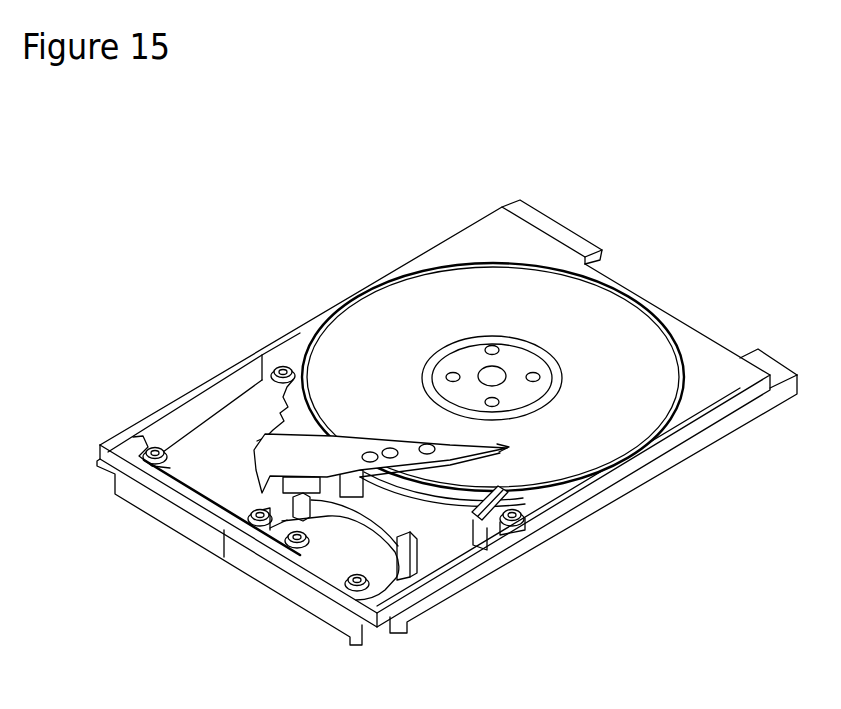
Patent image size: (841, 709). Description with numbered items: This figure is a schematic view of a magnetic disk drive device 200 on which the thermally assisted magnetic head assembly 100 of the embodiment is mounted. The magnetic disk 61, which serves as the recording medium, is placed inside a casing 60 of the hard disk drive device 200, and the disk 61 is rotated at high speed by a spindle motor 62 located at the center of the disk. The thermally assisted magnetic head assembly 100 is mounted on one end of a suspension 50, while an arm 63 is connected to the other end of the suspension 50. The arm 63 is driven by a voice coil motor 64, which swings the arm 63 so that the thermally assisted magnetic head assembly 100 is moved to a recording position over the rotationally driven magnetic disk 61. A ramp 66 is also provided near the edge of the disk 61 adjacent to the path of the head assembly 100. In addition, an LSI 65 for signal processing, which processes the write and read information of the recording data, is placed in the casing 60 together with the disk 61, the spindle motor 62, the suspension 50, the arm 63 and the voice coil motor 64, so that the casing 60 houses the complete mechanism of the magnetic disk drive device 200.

The suspension 50 is at (463, 447).
The casing 60 is at (483, 233).
The magnetic disk 61 is at (643, 337).
The spindle motor 62 is at (492, 376).
The arm 63 is at (323, 455).
The voice coil motor 64 is at (228, 458).
The LSI for signal processing 65 is at (317, 558).
The ramp 66 is at (500, 528).
The thermally assisted magnetic head assembly 100 is at (492, 453).
The magnetic disk drive device 200 is at (447, 397).